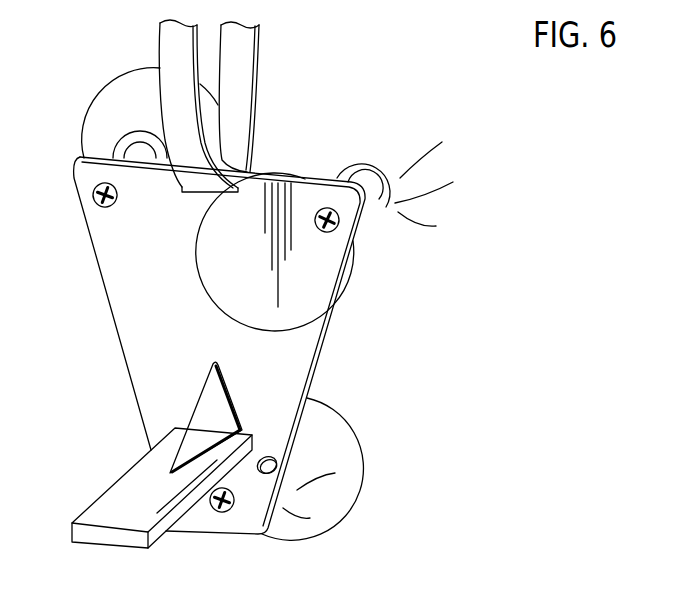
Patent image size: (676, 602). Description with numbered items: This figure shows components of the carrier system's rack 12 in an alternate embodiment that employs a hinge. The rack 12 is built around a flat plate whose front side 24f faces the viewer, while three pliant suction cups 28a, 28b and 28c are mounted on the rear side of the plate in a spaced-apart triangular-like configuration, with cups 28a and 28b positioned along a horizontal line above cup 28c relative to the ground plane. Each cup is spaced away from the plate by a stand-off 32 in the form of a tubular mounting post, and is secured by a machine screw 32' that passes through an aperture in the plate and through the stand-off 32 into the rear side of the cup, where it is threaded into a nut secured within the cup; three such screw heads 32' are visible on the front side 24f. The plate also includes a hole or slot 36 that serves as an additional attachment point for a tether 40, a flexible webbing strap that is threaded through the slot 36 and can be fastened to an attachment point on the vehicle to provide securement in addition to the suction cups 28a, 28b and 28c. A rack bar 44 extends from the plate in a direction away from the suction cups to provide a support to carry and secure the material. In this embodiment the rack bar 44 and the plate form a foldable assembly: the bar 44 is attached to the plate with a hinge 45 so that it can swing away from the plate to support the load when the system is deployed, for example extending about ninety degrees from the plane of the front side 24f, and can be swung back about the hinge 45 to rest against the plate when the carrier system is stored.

The rack 12 is at (356, 56).
The front side of plate 24f is at (212, 308).
The suction cup 28a is at (123, 92).
The suction cup 28b is at (412, 135).
The suction cup 28c is at (317, 494).
The stand-off 32 is at (207, 158).
The machine screw 32' is at (247, 381).
The hole or slot 36 is at (205, 194).
The tether 40 is at (173, 43).
The rack bar 44 is at (118, 497).
The hinge 45 is at (217, 392).